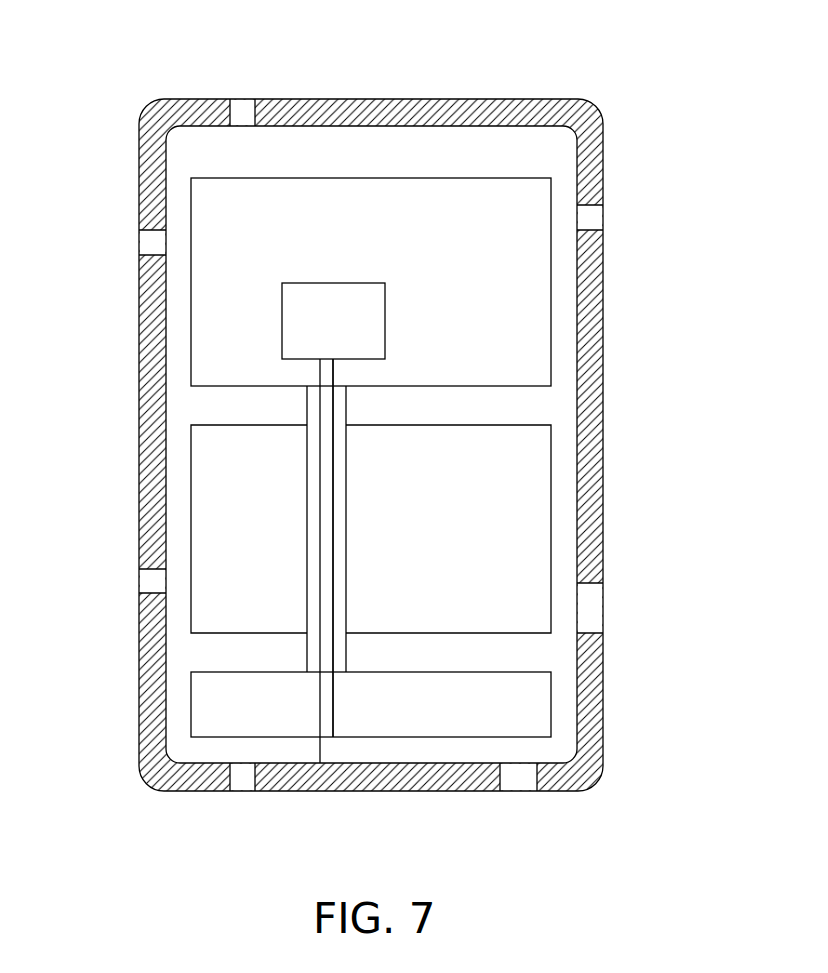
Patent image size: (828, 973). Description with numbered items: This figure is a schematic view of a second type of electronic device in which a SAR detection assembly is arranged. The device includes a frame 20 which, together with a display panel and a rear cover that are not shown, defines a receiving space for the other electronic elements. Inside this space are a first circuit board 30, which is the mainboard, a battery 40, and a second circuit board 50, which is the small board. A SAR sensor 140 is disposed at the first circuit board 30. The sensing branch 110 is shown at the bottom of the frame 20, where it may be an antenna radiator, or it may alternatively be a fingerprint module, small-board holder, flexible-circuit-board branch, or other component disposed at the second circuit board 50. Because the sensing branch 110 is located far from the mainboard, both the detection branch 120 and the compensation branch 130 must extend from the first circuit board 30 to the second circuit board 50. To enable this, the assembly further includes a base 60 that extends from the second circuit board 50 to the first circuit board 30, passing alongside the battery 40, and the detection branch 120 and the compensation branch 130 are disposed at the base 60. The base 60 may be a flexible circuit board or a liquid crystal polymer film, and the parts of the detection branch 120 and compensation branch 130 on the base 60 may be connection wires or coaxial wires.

The frame 20 is at (315, 99).
The first circuit board 30 is at (512, 295).
The battery 40 is at (282, 558).
The second circuit board 50 is at (512, 712).
The base 60 is at (346, 517).
The sensing branch 110 is at (413, 774).
The detection branch 120 is at (318, 468).
The compensation branch 130 is at (333, 452).
The SAR sensor 140 is at (282, 322).